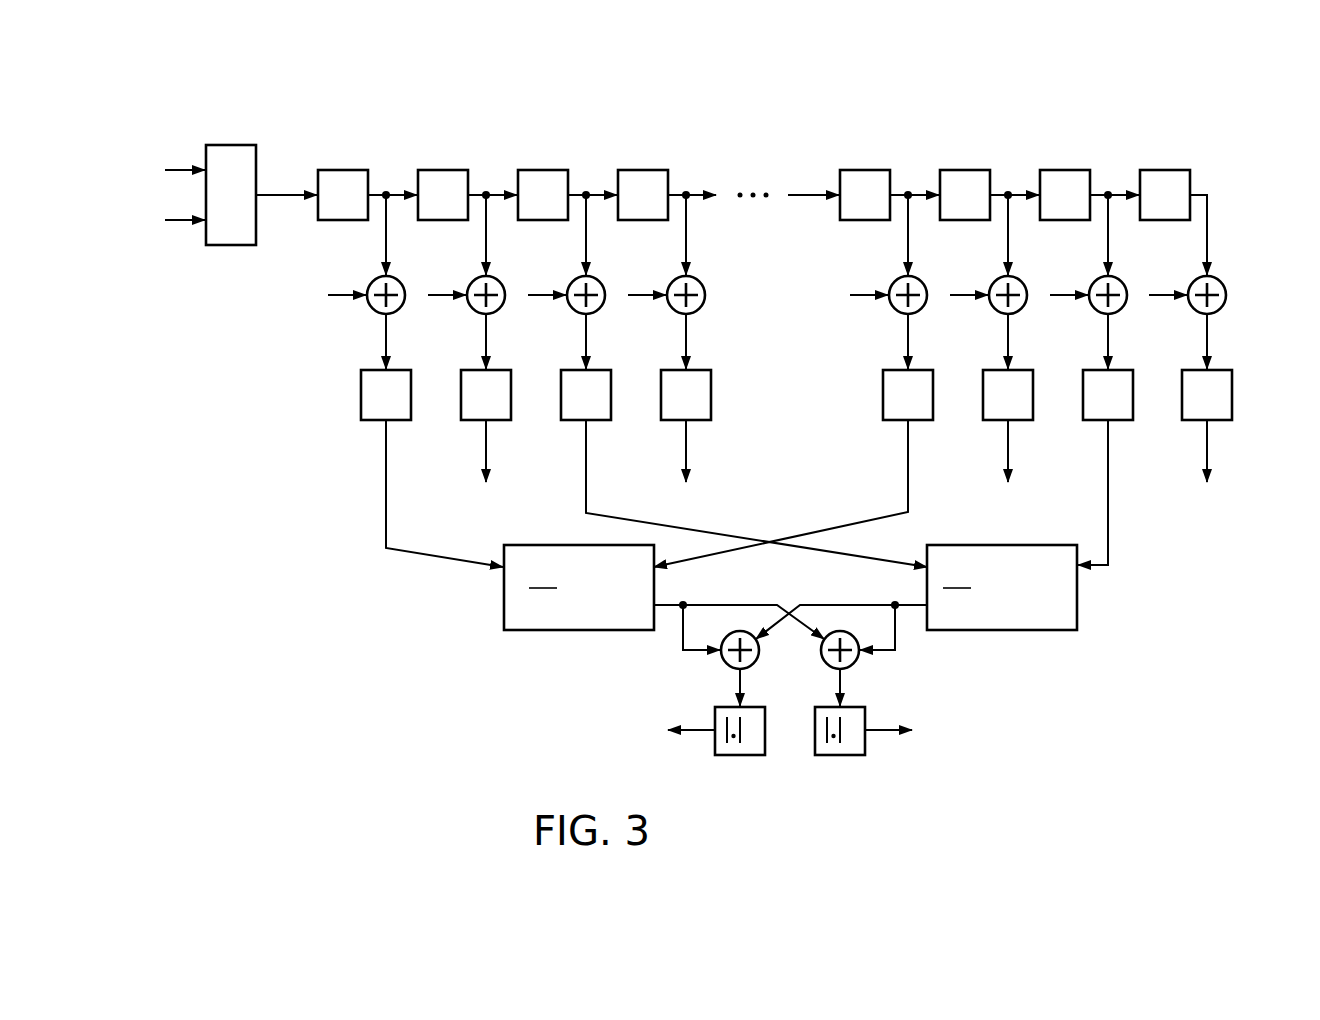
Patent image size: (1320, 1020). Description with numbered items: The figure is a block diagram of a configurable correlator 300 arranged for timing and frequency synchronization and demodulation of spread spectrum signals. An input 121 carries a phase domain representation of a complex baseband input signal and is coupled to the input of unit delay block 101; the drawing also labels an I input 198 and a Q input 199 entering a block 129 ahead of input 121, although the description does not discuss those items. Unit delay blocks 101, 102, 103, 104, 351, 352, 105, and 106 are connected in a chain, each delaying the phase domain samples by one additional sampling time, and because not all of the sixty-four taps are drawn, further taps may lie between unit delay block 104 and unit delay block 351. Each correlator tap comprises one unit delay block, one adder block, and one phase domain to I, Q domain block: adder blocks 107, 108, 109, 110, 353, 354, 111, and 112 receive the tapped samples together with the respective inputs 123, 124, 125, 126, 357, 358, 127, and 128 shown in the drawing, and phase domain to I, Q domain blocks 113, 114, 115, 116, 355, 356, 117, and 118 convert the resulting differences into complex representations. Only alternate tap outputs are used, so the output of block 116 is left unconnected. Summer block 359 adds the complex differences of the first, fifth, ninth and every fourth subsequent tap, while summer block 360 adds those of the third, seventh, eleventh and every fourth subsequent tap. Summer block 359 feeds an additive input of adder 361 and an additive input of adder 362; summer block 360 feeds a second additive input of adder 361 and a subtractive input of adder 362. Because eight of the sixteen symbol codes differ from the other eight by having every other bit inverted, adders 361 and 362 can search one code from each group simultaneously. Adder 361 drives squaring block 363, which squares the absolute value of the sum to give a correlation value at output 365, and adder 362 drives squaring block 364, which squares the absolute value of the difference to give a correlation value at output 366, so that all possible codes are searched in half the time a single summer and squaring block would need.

The configurable correlator 300 is at (232, 108).
The I input 198 is at (179, 169).
The Q input 199 is at (179, 222).
The phase mapping block Φ 129 is at (232, 245).
The input 121 is at (285, 197).
The unit delay block 101 is at (327, 170).
The unit delay block 102 is at (427, 170).
The unit delay block 103 is at (527, 170).
The unit delay block 104 is at (627, 170).
The unit delay block 351 is at (849, 170).
The unit delay block 352 is at (949, 170).
The unit delay block 105 is at (1049, 170).
The unit delay block 106 is at (1149, 170).
The adder block 107 is at (392, 276).
The adder block 108 is at (492, 276).
The adder block 109 is at (592, 276).
The adder block 110 is at (692, 276).
The adder block 353 is at (914, 276).
The adder block 354 is at (1014, 276).
The adder block 111 is at (1114, 276).
The adder block 112 is at (1213, 276).
The code phase input ω_k,0 123 is at (338, 293).
The code phase input ω_k,1 124 is at (438, 293).
The code phase input ω_k,2 125 is at (538, 293).
The code phase input ω_k,3 126 is at (638, 293).
The code phase input ω_k,2 357 is at (860, 293).
The code phase input ω_k,3 358 is at (960, 293).
The code phase input ω_k,62 127 is at (1060, 293).
The code phase input ω_k,63 128 is at (1159, 293).
The phase domain to I, Q domain block 113 is at (396, 370).
The phase domain to I, Q domain block 114 is at (496, 370).
The phase domain to I, Q domain block 115 is at (596, 370).
The phase domain to I, Q domain block 116 is at (696, 370).
The phase domain to I, Q domain block 355 is at (918, 370).
The phase domain to I, Q domain block 356 is at (1018, 370).
The phase domain to I, Q domain block 117 is at (1118, 370).
The phase domain to I, Q domain block 118 is at (1217, 370).
The summer block 359 is at (540, 545).
The summer block 360 is at (1038, 545).
The adder 361 is at (719, 665).
The adder 362 is at (818, 665).
The squaring block 363 is at (748, 755).
The squaring block 364 is at (848, 755).
The output 365 is at (700, 730).
The output 366 is at (880, 730).